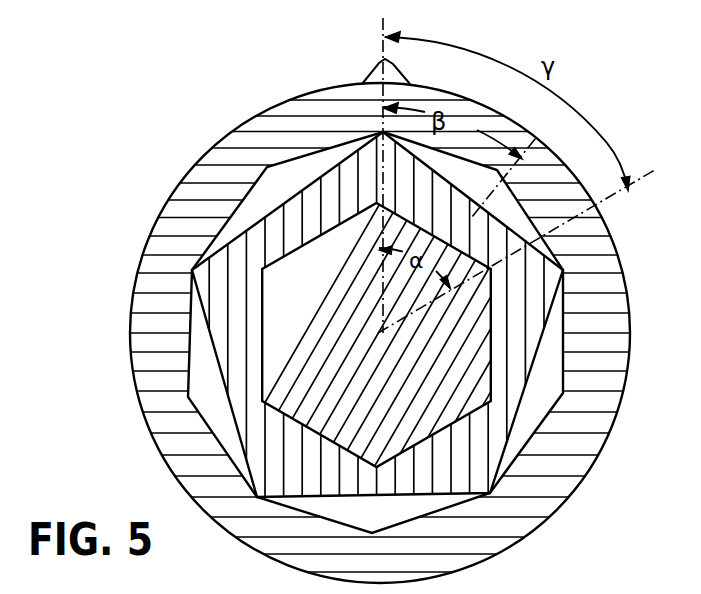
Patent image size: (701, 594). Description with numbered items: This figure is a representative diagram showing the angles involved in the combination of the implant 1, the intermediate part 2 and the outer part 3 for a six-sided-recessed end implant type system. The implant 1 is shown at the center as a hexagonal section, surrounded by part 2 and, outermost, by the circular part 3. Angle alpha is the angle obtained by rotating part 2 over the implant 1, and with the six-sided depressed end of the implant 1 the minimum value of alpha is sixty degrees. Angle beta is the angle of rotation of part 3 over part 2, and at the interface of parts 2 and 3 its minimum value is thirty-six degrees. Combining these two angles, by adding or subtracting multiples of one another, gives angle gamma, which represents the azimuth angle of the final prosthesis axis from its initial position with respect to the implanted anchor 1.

The implant 1 is at (478, 333).
The part 2 (intermediate part) 2 is at (512, 385).
The part 3 (prosthesis part) 3 is at (585, 425).